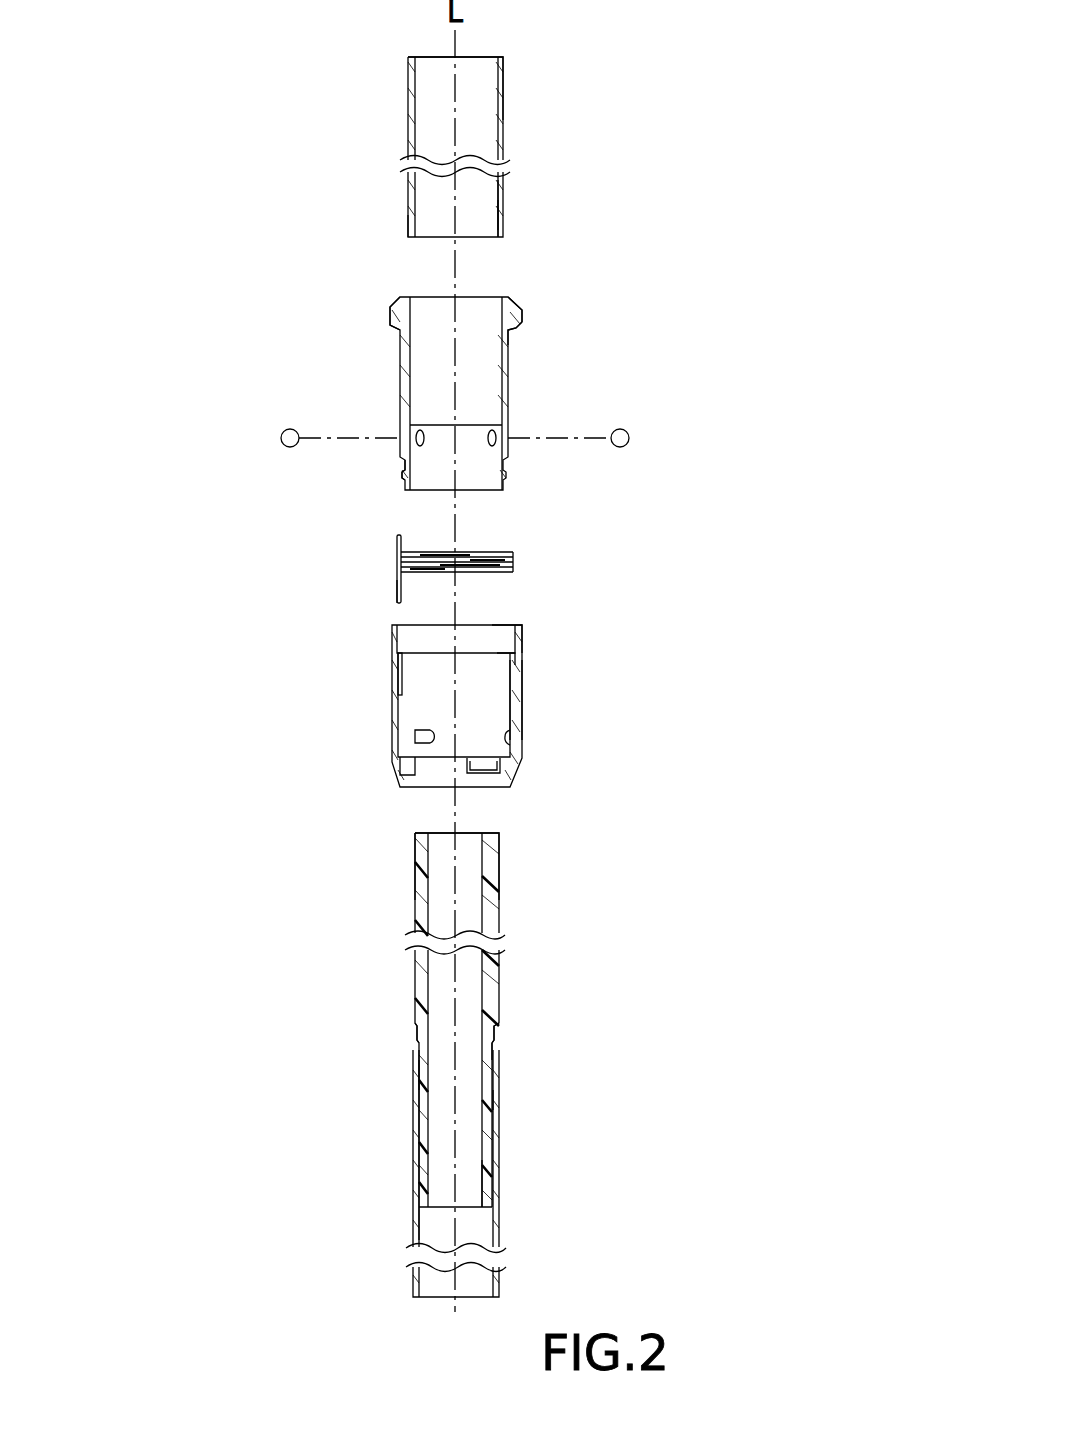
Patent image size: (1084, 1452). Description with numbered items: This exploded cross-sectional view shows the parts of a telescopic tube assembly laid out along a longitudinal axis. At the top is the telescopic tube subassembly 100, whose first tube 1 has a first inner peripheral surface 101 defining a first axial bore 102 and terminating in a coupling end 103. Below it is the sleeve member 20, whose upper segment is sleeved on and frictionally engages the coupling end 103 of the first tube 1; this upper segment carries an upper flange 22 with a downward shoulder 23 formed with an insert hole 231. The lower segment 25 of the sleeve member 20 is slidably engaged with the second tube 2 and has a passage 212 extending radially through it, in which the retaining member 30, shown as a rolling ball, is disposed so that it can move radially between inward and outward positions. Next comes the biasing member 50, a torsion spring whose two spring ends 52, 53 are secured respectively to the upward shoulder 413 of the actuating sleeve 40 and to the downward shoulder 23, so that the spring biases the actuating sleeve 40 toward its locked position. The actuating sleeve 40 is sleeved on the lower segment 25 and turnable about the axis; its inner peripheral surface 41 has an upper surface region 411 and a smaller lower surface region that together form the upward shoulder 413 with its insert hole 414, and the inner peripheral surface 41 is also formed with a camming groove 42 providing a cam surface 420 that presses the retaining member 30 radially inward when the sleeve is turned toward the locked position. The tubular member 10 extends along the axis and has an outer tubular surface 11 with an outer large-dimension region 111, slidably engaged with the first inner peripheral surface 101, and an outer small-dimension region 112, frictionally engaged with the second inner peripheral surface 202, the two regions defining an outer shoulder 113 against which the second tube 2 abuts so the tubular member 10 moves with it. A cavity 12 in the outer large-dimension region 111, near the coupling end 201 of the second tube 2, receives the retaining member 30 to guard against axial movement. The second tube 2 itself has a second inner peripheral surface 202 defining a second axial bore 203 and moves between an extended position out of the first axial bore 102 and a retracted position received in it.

The telescopic tube subassembly 100 is at (378, 112).
The first tube 1 is at (507, 106).
The first inner peripheral surface 101 is at (488, 212).
The first axial bore 102 is at (488, 218).
The coupling end 103 is at (408, 224).
The sleeve member 20 is at (516, 367).
The upper flange 22 is at (516, 300).
The downward shoulder 23 is at (526, 336).
The insert hole 231 is at (395, 322).
The passage 212 is at (416, 436).
The lower segment 25 is at (404, 458).
The retaining member 30 is at (630, 435).
The biasing member 50 is at (520, 552).
The spring end 52 is at (396, 540).
The spring end 53 is at (392, 590).
The actuating sleeve 40 is at (526, 740).
The inner peripheral surface 41 is at (506, 694).
The upper surface region 411 is at (510, 633).
The upward shoulder 413 is at (518, 662).
The insert hole 414 is at (396, 672).
The camming groove 42 is at (420, 737).
The cam surface 420 is at (422, 747).
The tubular member 10 is at (503, 975).
The outer tubular surface 11 is at (500, 870).
The outer large-dimension region 111 is at (415, 880).
The cavity 12 is at (500, 1031).
The outer shoulder 113 is at (500, 1050).
The outer small-dimension region 112 is at (495, 1170).
The second tube 2 is at (502, 1220).
The coupling end 201 is at (498, 1100).
The second inner peripheral surface 202 is at (423, 1074).
The second axial bore 203 is at (435, 1222).